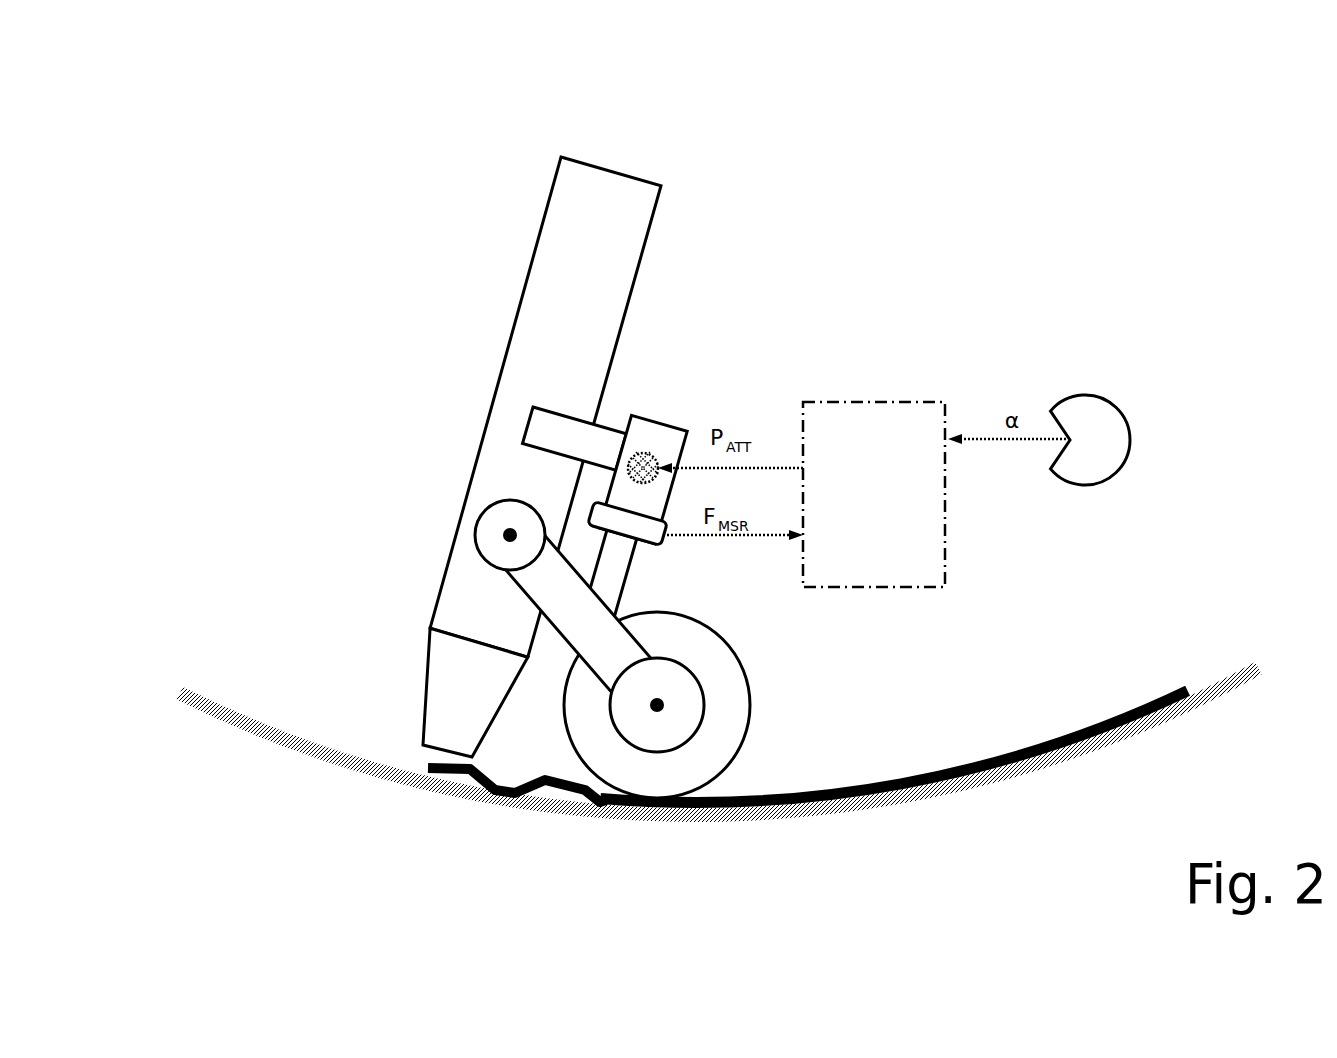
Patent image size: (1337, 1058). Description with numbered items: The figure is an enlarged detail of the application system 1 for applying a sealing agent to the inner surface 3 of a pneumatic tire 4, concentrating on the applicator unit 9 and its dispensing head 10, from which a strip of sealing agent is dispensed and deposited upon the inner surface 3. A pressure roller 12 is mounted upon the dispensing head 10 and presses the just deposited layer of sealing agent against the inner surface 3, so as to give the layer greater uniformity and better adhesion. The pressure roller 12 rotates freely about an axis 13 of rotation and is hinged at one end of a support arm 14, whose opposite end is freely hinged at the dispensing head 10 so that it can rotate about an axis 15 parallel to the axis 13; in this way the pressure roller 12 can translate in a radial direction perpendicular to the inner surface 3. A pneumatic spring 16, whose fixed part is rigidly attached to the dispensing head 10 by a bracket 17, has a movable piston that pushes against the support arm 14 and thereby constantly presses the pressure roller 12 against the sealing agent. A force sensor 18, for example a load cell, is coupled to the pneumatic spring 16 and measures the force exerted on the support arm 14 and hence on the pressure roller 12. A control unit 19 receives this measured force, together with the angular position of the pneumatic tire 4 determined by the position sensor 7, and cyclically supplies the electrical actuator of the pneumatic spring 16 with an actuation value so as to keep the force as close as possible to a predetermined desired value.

The application system 1 is at (205, 97).
The inner surface 3 is at (224, 697).
The pneumatic tire 4 is at (280, 740).
The position sensor 7 is at (1092, 440).
The applicator unit 9 is at (308, 274).
The dispensing head 10 is at (448, 678).
The pressure roller 12 is at (723, 718).
The axis of rotation 13 is at (668, 698).
The support arm 14 is at (573, 613).
The axis of rotation 15 is at (502, 530).
The pneumatic spring 16 is at (642, 433).
The bracket 17 is at (562, 430).
The force sensor 18 is at (652, 537).
The control unit 19 is at (874, 494).